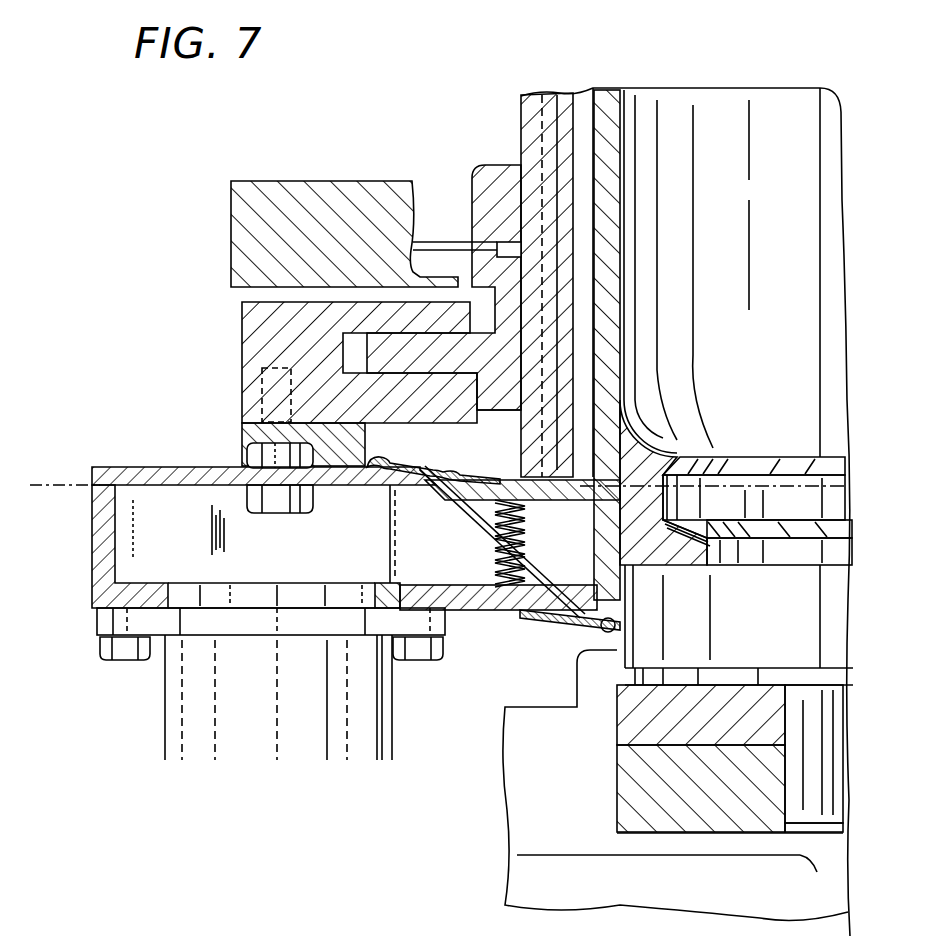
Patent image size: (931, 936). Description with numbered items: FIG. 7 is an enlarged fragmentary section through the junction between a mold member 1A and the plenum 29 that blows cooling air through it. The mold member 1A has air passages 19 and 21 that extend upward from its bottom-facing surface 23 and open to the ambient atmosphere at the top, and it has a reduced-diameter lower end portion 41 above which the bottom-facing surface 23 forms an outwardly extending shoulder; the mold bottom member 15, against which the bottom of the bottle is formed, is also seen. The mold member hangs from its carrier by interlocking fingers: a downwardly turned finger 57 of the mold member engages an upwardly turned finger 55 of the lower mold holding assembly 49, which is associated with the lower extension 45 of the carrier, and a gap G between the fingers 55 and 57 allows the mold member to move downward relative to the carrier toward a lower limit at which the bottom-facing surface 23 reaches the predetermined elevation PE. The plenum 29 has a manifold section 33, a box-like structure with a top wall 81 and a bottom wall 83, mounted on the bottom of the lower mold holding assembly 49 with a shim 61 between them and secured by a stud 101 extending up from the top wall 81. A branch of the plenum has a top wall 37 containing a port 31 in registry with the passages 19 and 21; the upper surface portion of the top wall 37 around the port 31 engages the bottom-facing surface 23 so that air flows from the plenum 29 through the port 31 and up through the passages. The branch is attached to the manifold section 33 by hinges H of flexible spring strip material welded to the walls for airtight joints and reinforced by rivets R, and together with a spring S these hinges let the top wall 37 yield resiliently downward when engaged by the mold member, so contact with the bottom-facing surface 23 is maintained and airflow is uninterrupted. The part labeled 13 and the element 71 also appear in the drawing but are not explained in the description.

The mold member 1A is at (735, 85).
The pipe wall 13 is at (616, 251).
The mold bottom member 15 is at (717, 457).
The air passages (inner group) 19 is at (583, 133).
The air passages (outer group) 21 is at (520, 130).
The bottom-facing surface 23 is at (543, 480).
The plenum 29 is at (94, 455).
The port 31 is at (538, 520).
The manifold section 33 is at (92, 531).
The top wall of branch 37 is at (477, 473).
The reduced-diameter lower end portion 41 is at (620, 595).
The lower extension of carrier 45 is at (248, 193).
The lower mold holding assembly 49 is at (226, 311).
The upwardly turned finger 55 is at (489, 295).
The downwardly turned finger 57 is at (507, 262).
The shim 61 is at (242, 422).
The tube 71 is at (200, 590).
The top wall of manifold section 81 is at (207, 465).
The bottom wall of manifold section 83 is at (503, 640).
The stud 101 is at (262, 372).
The gap G is at (432, 272).
The hinge H is at (405, 458).
The rivet R is at (362, 492).
The spring S is at (527, 548).
The predetermined elevation PE is at (76, 478).